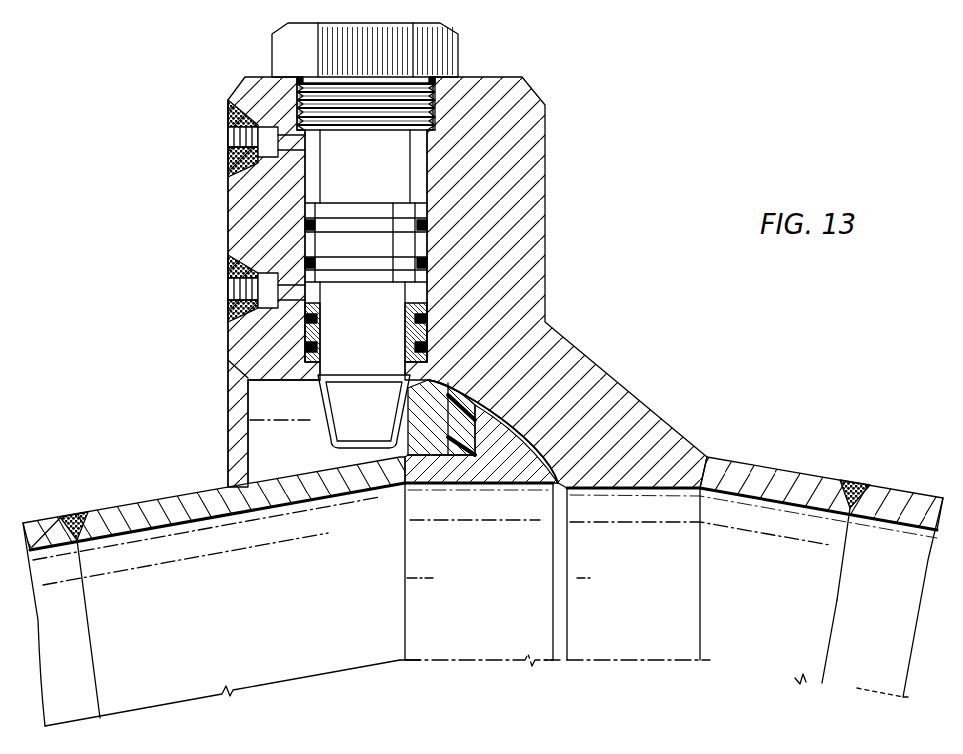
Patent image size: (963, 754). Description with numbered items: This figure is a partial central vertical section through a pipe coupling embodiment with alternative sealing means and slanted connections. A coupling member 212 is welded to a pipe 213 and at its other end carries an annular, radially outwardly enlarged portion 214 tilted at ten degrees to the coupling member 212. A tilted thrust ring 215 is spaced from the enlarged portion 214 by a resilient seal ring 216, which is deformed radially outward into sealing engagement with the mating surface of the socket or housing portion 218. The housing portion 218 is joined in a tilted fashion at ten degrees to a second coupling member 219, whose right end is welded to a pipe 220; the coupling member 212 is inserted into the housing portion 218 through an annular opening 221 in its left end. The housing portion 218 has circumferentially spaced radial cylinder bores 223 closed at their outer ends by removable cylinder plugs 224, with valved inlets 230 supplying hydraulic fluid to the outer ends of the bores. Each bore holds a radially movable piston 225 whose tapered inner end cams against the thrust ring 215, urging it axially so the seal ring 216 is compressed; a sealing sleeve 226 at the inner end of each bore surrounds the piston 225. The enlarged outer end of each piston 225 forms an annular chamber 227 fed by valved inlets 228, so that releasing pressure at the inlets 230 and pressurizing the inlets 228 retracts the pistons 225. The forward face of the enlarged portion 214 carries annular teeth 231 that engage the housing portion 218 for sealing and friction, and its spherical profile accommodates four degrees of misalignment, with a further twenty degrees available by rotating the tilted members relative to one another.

The coupling member 212 is at (132, 502).
The pipe 213 is at (45, 520).
The enlarged portion 214 is at (520, 440).
The thrust ring 215 is at (425, 442).
The seal ring 216 is at (477, 400).
The housing portion 218 is at (650, 443).
The coupling member 219 is at (781, 463).
The pipe 220 is at (888, 483).
The annular opening 221 is at (270, 380).
The cylinder bores 223 is at (430, 160).
The cylinder plugs 224 is at (450, 43).
The piston 225 is at (348, 325).
The sealing sleeve 226 is at (427, 330).
The annular chambers 227 is at (427, 290).
The valved inlets 228 is at (233, 290).
The valved inlets 230 is at (233, 142).
The annular teeth 231 is at (520, 433).